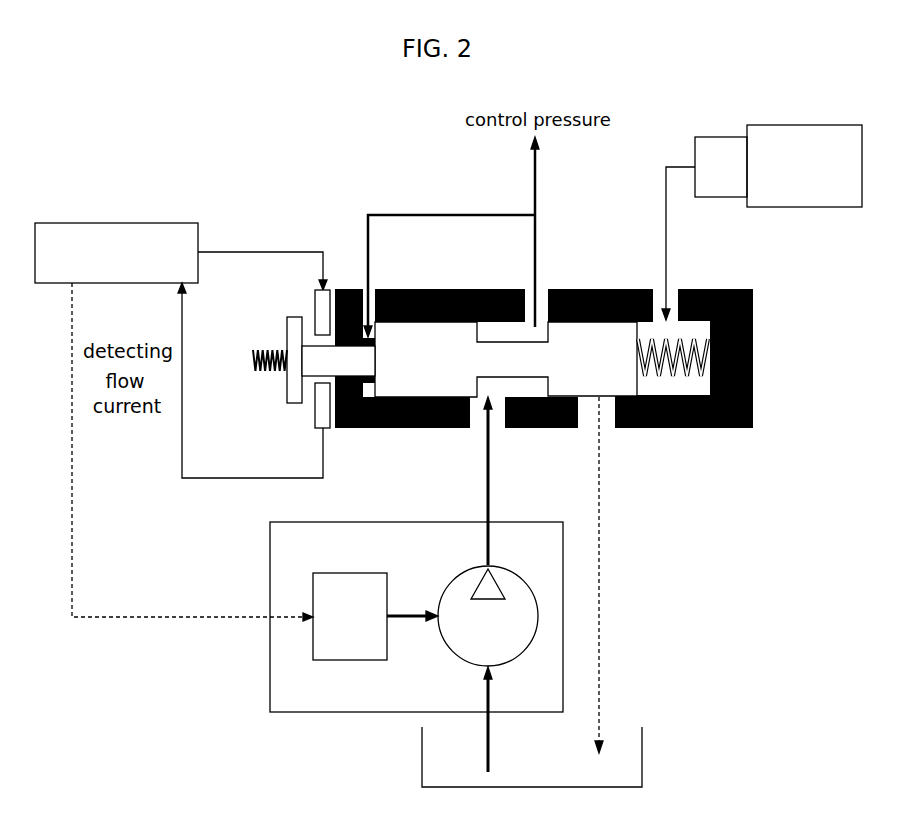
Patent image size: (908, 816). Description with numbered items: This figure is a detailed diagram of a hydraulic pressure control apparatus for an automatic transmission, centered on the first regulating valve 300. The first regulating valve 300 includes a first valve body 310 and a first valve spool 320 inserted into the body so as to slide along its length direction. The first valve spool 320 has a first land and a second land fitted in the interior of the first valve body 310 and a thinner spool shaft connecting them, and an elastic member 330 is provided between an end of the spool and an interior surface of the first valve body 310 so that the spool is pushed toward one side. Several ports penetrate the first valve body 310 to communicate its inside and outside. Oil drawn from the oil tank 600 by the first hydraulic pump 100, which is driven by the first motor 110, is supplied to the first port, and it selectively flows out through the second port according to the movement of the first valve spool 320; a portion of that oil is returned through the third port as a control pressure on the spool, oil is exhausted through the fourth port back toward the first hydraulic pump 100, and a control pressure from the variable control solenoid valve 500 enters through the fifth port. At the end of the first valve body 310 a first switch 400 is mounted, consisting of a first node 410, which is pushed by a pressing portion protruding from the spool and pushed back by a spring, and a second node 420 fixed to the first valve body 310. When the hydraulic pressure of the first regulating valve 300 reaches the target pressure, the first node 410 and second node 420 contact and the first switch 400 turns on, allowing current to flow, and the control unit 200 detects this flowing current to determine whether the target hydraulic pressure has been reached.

The first hydraulic pump 100 is at (387, 590).
The first motor 110 is at (313, 592).
The control unit 200 is at (113, 223).
The first regulating valve 300 is at (567, 397).
The first valve body 310 is at (753, 353).
The first valve spool 320 is at (603, 397).
The elastic member 330 is at (680, 378).
The first switch 400 is at (261, 363).
The first node 410 is at (292, 332).
The second node 420 is at (315, 302).
The variable control solenoid valve 500 is at (804, 125).
The oil tank 600 is at (630, 757).